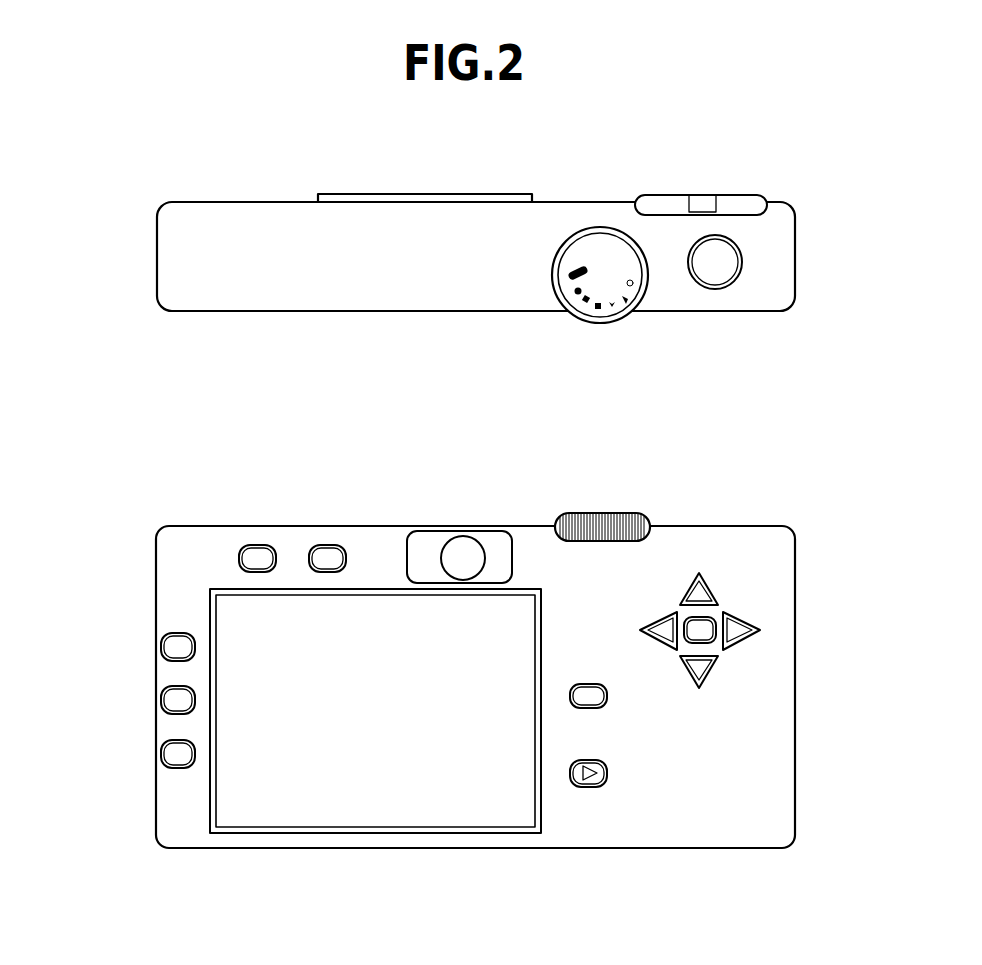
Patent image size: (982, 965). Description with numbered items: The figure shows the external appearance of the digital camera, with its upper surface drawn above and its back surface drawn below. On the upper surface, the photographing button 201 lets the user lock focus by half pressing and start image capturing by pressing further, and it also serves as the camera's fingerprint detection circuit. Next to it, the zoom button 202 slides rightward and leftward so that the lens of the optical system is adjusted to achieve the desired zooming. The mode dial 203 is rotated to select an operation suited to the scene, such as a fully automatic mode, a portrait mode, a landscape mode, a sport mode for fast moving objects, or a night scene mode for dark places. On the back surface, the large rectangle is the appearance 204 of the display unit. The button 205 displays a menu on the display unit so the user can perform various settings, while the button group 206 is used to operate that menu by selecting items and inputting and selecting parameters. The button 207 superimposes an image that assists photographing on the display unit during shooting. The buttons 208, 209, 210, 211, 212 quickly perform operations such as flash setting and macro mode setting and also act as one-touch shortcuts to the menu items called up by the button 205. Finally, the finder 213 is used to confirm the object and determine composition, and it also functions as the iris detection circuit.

The photographing button 201 is at (727, 288).
The zoom button 202 is at (747, 202).
The mode dial 203 is at (627, 316).
The appearance of the display unit 204 is at (332, 833).
The button 205 is at (608, 696).
The button group 206 is at (727, 655).
The button 207 is at (608, 773).
The button 208 is at (335, 545).
The button 209 is at (252, 545).
The button 210 is at (161, 647).
The button 211 is at (161, 700).
The button 212 is at (161, 753).
The finder 213 is at (463, 537).